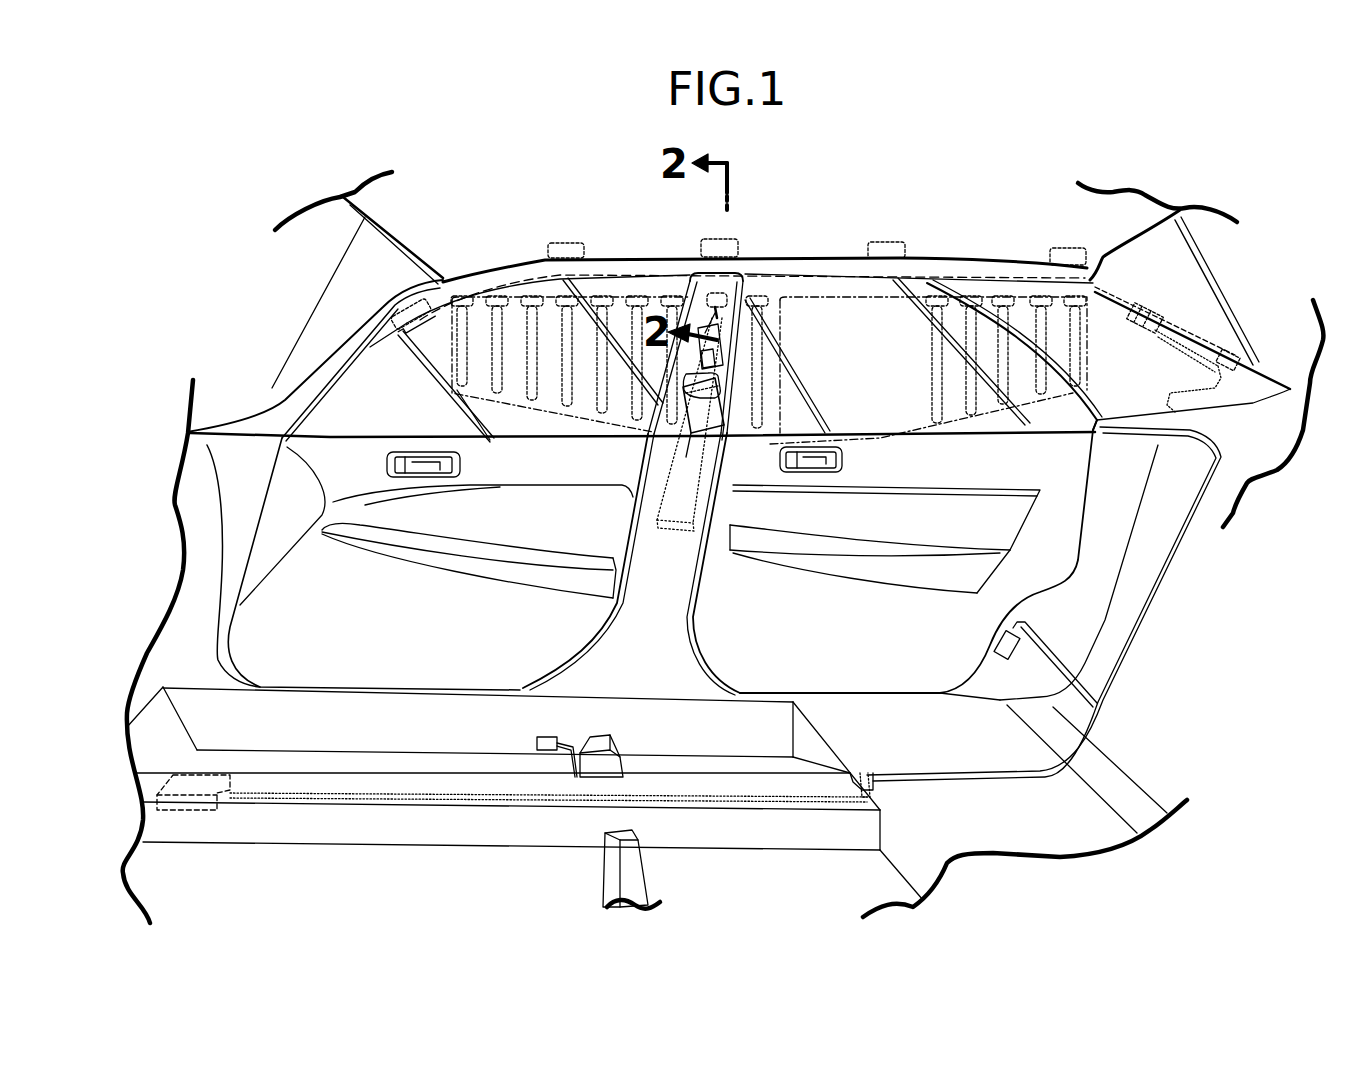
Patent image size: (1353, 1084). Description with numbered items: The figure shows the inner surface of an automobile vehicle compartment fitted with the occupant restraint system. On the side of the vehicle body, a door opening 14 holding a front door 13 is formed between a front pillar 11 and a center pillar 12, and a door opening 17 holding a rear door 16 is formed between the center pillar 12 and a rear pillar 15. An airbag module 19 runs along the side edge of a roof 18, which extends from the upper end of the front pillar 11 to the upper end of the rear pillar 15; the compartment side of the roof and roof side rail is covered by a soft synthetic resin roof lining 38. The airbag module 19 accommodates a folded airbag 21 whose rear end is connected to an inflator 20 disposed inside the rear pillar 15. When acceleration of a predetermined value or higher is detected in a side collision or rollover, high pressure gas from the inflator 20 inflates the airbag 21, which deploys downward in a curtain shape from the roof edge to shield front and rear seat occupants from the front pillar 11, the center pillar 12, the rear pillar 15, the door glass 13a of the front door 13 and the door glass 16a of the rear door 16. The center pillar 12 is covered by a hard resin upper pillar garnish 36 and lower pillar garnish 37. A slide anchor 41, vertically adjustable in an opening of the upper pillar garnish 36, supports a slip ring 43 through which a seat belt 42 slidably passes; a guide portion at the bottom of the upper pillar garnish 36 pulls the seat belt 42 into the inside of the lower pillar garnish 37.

The front pillar 11 is at (337, 353).
The center pillar 12 is at (730, 313).
The front door 13 is at (512, 540).
The door glass of the front door 13a is at (377, 428).
The door opening 14 is at (257, 487).
The rear pillar 15 is at (1080, 397).
The rear door 16 is at (917, 533).
The door glass of the rear door 16a is at (887, 417).
The door opening 17 is at (1080, 495).
The roof 18 is at (1053, 190).
The airbag module 19 is at (650, 255).
The inflator 20 is at (1210, 330).
The airbag 21 is at (513, 400).
The upper pillar garnish 36 is at (735, 345).
The lower pillar garnish 37 is at (705, 500).
The roof lining 38 is at (835, 208).
The slide anchor 41 is at (705, 379).
The seat belt 42 is at (632, 512).
The slip ring 43 is at (730, 407).